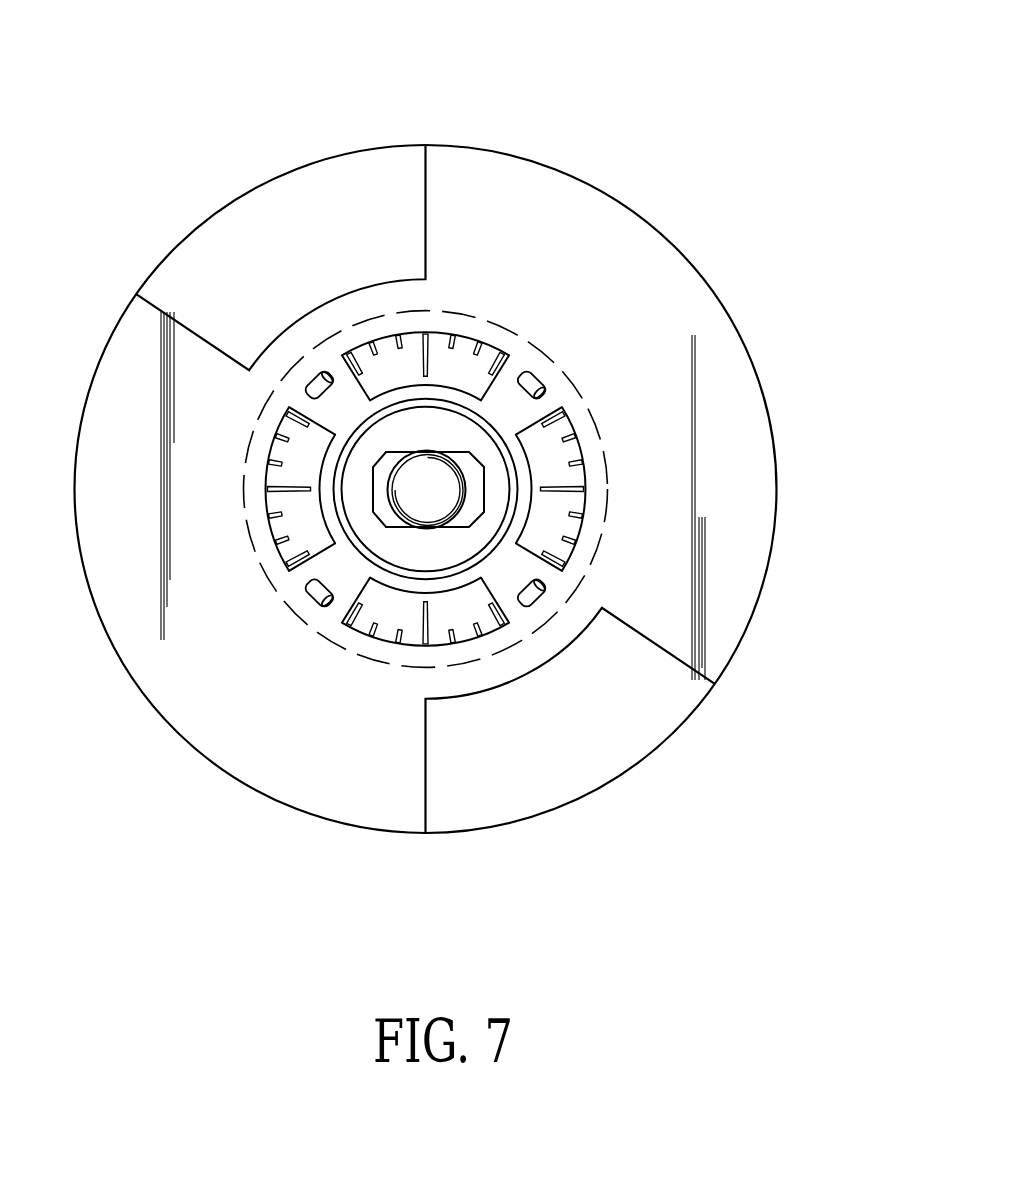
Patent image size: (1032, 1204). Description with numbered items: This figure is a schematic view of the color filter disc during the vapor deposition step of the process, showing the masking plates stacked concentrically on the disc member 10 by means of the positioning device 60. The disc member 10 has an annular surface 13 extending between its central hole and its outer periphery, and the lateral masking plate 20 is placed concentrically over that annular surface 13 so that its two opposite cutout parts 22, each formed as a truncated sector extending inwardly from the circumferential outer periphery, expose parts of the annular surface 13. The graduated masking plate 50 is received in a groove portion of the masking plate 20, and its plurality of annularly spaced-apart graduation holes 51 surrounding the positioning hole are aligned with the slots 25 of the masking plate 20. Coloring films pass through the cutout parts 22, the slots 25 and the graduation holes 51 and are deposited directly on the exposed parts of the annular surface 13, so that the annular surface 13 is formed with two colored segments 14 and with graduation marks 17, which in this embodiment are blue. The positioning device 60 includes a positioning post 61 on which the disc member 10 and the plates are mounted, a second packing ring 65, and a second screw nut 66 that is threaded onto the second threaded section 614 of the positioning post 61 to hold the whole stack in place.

The disc member 10 is at (148, 272).
The annular surface 13 is at (285, 208).
The colored segments 14 is at (345, 207).
The graduation marks 17 is at (593, 489).
The lateral masking plate 20 is at (152, 715).
The cutout parts 22 is at (444, 451).
The slots 25 is at (573, 547).
The graduated masking plate 50 is at (548, 463).
The graduation holes 51 is at (348, 489).
The positioning device 60 is at (437, 443).
The positioning post 61 is at (402, 304).
The second threaded section 614 is at (422, 477).
The second packing ring 65 is at (463, 433).
The second screw nut 66 is at (470, 470).